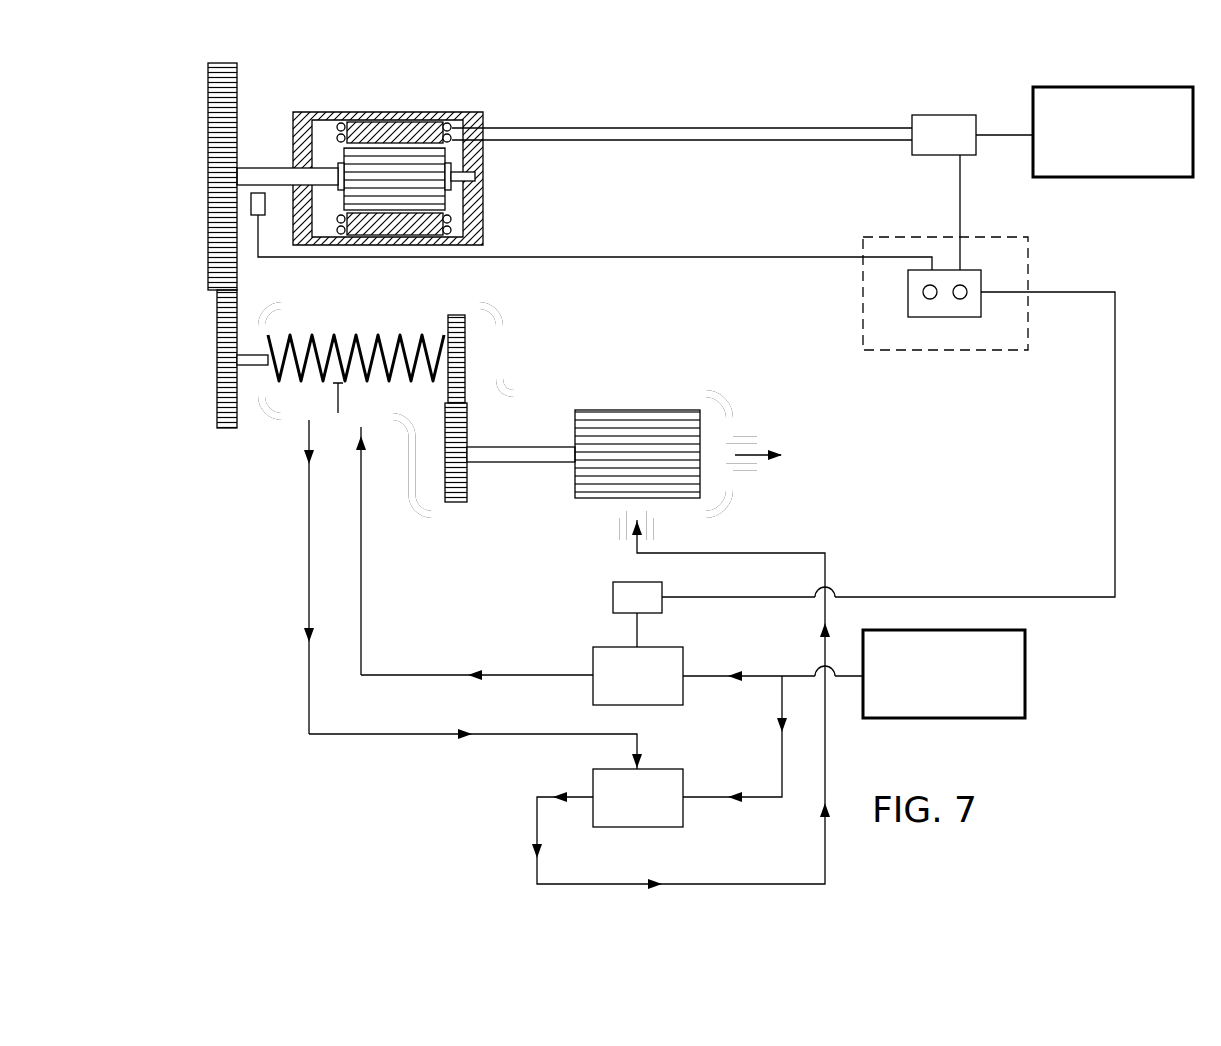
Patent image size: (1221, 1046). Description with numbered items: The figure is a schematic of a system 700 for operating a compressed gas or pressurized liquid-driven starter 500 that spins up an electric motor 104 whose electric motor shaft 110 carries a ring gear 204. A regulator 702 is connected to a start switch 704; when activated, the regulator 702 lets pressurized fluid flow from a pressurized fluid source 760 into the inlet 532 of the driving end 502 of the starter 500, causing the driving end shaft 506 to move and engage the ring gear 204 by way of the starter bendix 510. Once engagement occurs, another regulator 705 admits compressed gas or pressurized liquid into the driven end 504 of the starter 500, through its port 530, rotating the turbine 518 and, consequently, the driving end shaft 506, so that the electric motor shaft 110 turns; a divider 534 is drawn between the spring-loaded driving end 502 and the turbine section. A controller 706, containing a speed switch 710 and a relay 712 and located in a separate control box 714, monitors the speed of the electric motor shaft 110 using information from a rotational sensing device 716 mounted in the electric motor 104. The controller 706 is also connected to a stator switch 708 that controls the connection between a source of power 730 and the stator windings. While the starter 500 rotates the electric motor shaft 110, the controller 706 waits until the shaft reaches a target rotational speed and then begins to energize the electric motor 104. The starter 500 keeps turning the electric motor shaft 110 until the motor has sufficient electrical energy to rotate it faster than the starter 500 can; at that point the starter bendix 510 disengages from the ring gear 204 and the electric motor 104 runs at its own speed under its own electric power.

The electric motor 104 is at (455, 125).
The electric motor shaft 110 is at (270, 178).
The ring gear 204 is at (210, 168).
The rotational sensing device 716 is at (251, 203).
The stator switch 708 is at (926, 114).
The source of power 730 is at (1105, 178).
The control box 714 is at (863, 258).
The controller 706 is at (908, 290).
The speed switch 710 is at (930, 300).
The relay 712 is at (960, 300).
The driving end 502 is at (489, 297).
The housing second section 504 is at (746, 409).
The driving end shaft 506 is at (333, 355).
The starter bendix 510 is at (229, 373).
The divider 534 is at (340, 393).
The inlet 532 is at (300, 432).
The fluid inlet 530 is at (365, 428).
The starter 500 is at (458, 545).
The turbine 518 is at (652, 420).
The start switch 704 is at (613, 596).
The regulator 702 is at (683, 700).
The regulator 705 is at (683, 816).
The pressurized fluid source 760 is at (1025, 672).
The system 700 is at (211, 712).